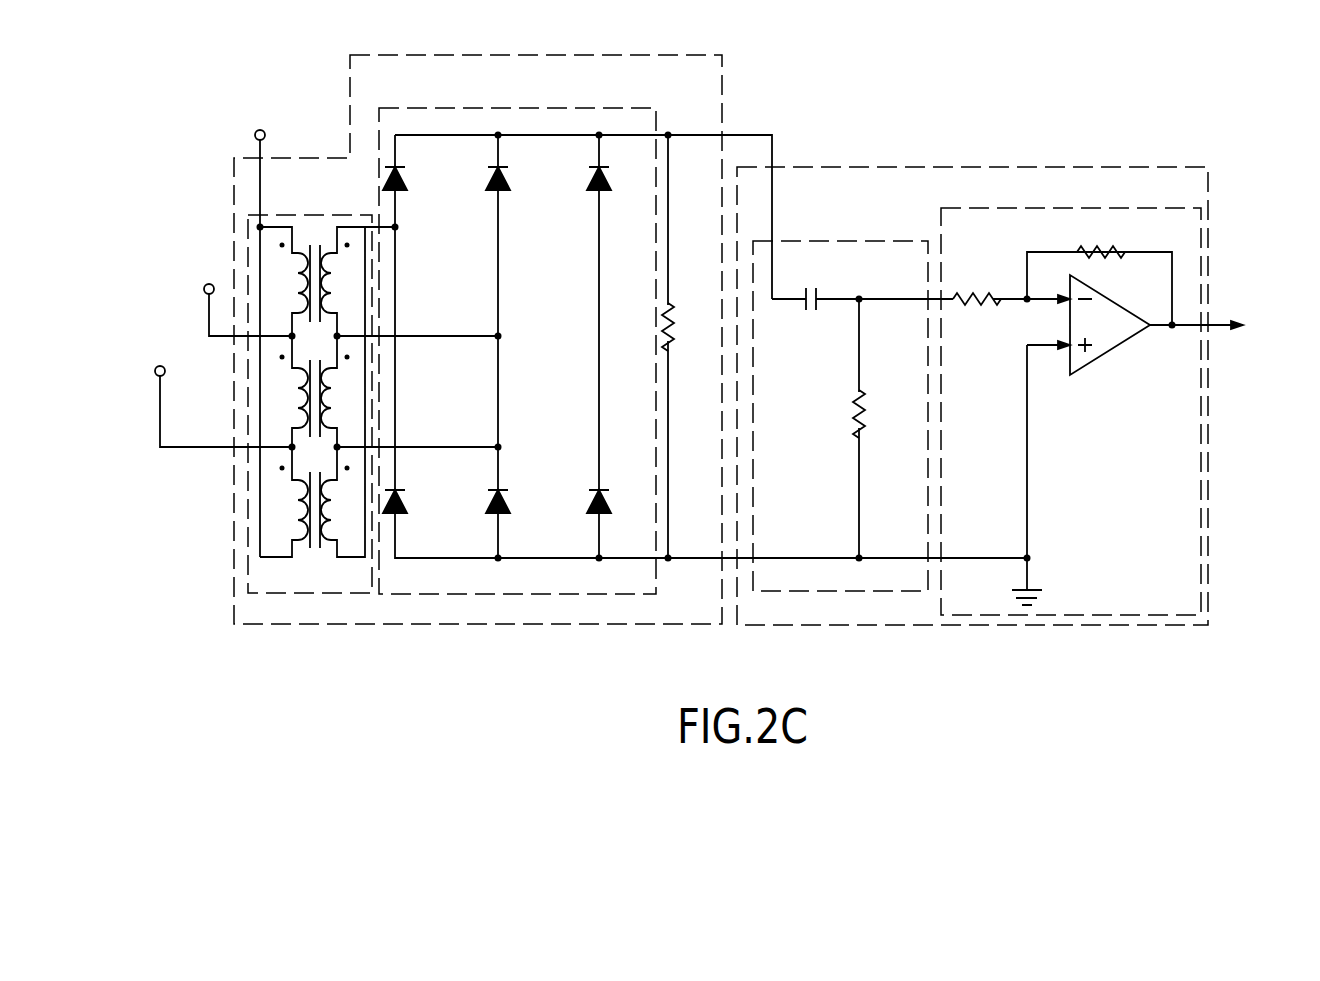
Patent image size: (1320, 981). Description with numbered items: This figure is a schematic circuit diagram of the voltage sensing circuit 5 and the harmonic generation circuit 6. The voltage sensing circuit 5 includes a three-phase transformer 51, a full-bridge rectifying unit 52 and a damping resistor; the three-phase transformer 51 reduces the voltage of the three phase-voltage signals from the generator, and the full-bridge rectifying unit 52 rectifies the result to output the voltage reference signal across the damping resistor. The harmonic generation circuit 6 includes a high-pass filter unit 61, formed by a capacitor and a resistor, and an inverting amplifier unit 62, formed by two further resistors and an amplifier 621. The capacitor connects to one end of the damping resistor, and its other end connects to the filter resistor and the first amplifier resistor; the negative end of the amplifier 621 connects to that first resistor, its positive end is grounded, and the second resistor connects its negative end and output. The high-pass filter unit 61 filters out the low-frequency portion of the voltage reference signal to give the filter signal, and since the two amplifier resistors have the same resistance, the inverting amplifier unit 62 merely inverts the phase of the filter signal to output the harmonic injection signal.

The voltage sensing circuit 5 is at (400, 55).
The three-phase transformer 51 is at (305, 215).
The full-bridge rectifying unit 52 is at (595, 108).
The harmonic generation circuit 6 is at (1045, 167).
The high-pass filter unit 61 is at (900, 241).
The inverting amplifier unit 62 is at (1138, 208).
The amplifier 621 is at (1115, 350).